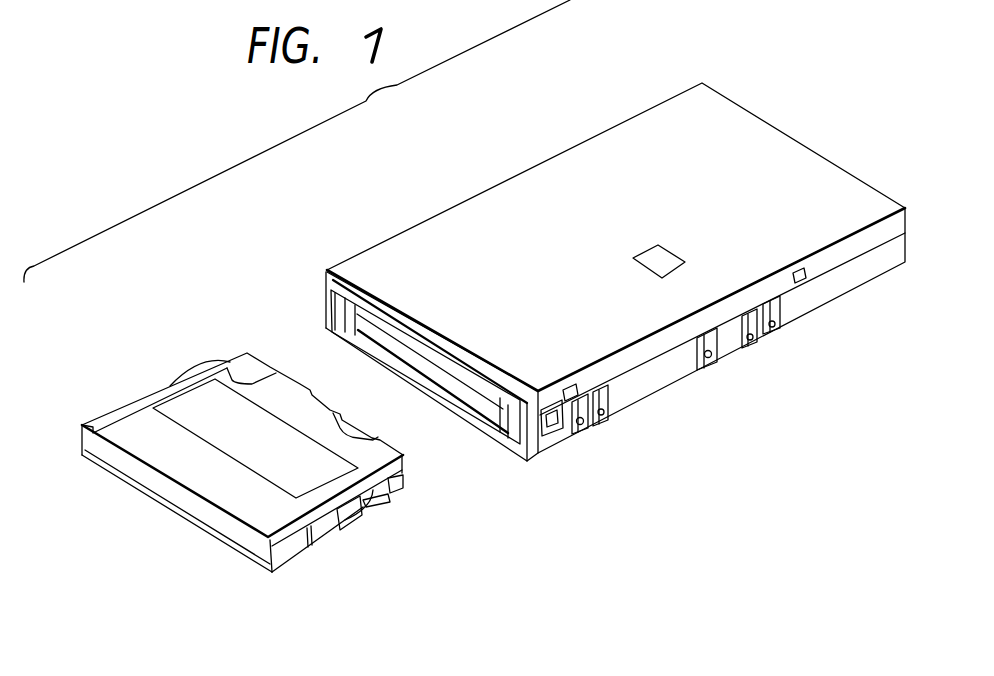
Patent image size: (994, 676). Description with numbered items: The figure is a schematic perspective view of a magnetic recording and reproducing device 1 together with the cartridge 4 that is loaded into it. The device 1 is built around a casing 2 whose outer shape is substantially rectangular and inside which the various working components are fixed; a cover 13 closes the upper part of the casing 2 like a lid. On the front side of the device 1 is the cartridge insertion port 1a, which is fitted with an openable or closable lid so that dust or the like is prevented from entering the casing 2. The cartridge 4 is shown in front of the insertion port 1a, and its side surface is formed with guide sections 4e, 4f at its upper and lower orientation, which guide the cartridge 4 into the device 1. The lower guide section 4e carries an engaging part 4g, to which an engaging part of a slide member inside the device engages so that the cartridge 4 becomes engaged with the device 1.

The magnetic recording and reproducing device 1 is at (494, 178).
The cartridge insertion port 1a is at (488, 398).
The casing 2 is at (667, 370).
The cover 13 is at (643, 136).
The cartridge 4 is at (208, 348).
The lower guide section 4e is at (407, 478).
The guide section 4f is at (192, 372).
The engaging part 4g is at (382, 497).